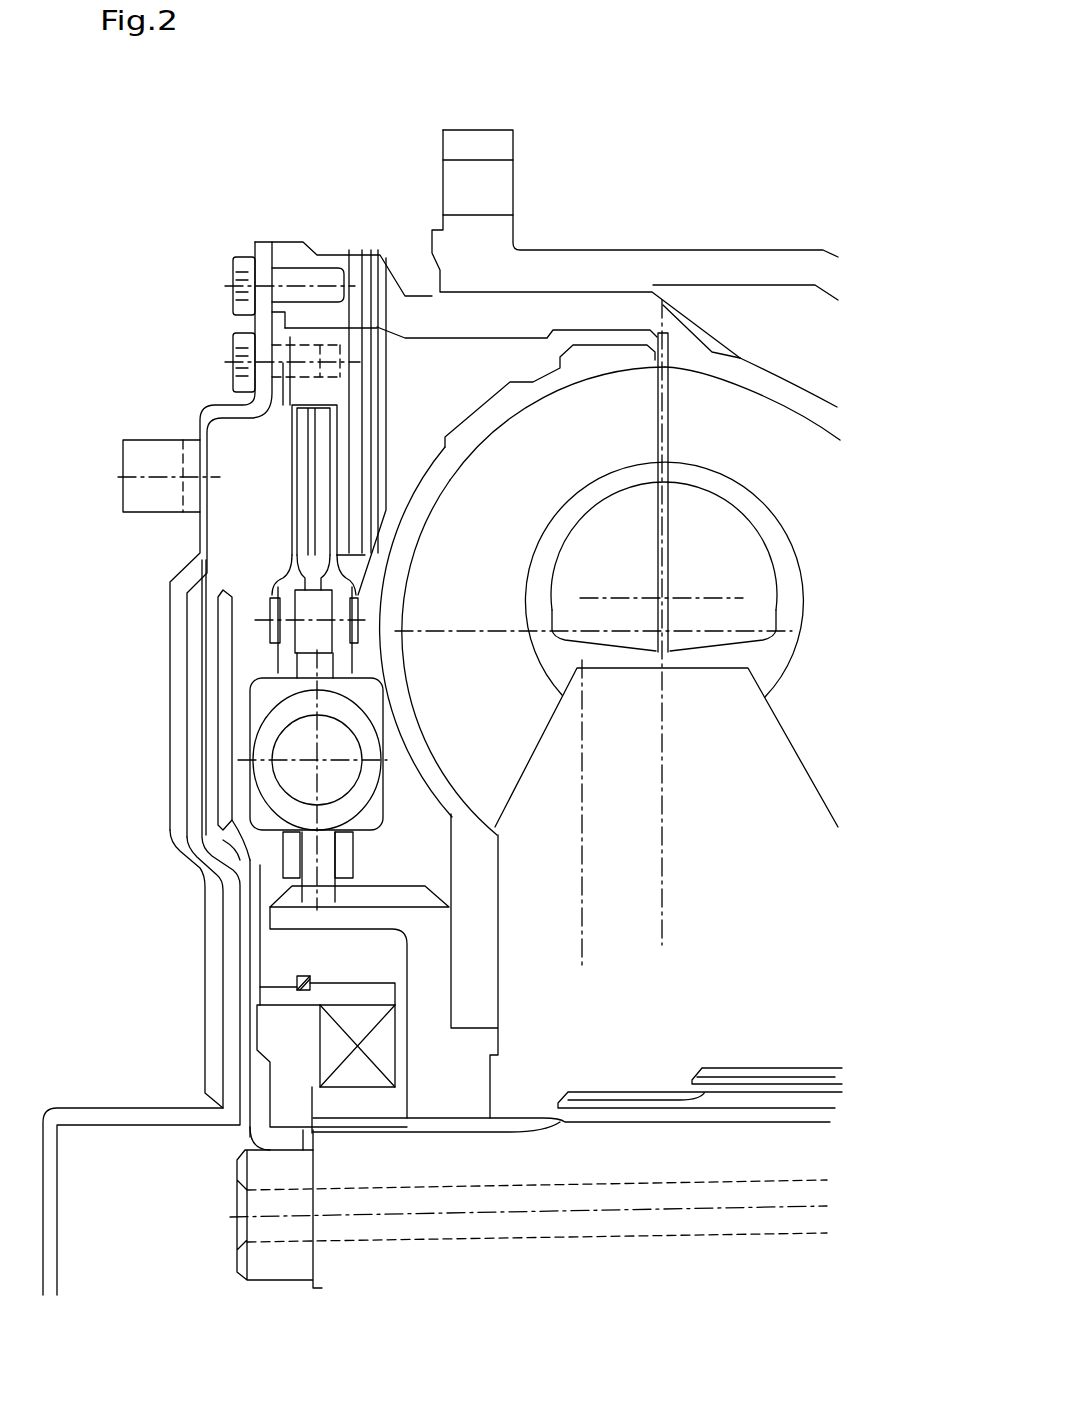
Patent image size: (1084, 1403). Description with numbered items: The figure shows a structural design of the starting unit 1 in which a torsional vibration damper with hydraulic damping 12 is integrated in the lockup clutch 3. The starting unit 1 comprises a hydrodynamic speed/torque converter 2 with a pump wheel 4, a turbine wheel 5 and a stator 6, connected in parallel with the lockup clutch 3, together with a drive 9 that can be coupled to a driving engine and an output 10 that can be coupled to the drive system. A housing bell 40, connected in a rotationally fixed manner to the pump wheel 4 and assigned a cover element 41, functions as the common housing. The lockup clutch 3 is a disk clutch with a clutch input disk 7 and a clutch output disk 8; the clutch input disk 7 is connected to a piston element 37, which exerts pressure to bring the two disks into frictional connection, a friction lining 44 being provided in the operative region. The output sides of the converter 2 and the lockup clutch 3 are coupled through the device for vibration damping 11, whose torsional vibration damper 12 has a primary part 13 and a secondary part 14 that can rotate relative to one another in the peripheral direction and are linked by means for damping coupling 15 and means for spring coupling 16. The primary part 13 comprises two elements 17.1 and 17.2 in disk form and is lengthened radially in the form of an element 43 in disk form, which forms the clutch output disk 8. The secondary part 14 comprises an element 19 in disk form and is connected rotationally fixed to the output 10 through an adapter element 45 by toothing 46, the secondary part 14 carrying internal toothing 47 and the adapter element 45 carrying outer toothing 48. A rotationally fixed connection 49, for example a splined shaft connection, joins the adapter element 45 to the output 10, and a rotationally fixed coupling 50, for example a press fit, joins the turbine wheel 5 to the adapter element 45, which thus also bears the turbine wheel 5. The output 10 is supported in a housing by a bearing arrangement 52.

The starting unit 1 is at (578, 133).
The hydrodynamic speed/torque converter 2 is at (757, 350).
The lockup clutch 3 is at (395, 372).
The pump wheel 4 is at (767, 448).
The turbine wheel 5 is at (524, 488).
The stator 6 is at (712, 740).
The clutch input disk 7 is at (326, 462).
The clutch output disk 8 is at (342, 268).
The drive 9 is at (75, 1113).
The output 10 is at (574, 1162).
The device for vibration damping 11 is at (402, 817).
The torsional vibration damper with hydraulic damping 12 is at (365, 578).
The primary part 13 is at (320, 510).
The secondary part 14 is at (330, 872).
The means for damping coupling 15 is at (298, 617).
The means for spring coupling 16 is at (217, 774).
The element in disk form 17.1 is at (290, 675).
The element in disk form 17.2 is at (317, 683).
The element in disk form 19 is at (312, 903).
The piston element 37 is at (273, 533).
The housing bell 40 is at (384, 500).
The cover element 41 is at (243, 315).
The element in disk form 43 is at (290, 427).
The friction lining 44 is at (288, 505).
The adapter element 45 is at (462, 1088).
The toothing 46 is at (421, 883).
The internal toothing 47 is at (340, 905).
The outer toothing 48 is at (295, 982).
The rotationally fixed connection 49 is at (498, 1113).
The rotationally fixed coupling 50 is at (475, 957).
The bearing arrangement 52 is at (372, 1080).